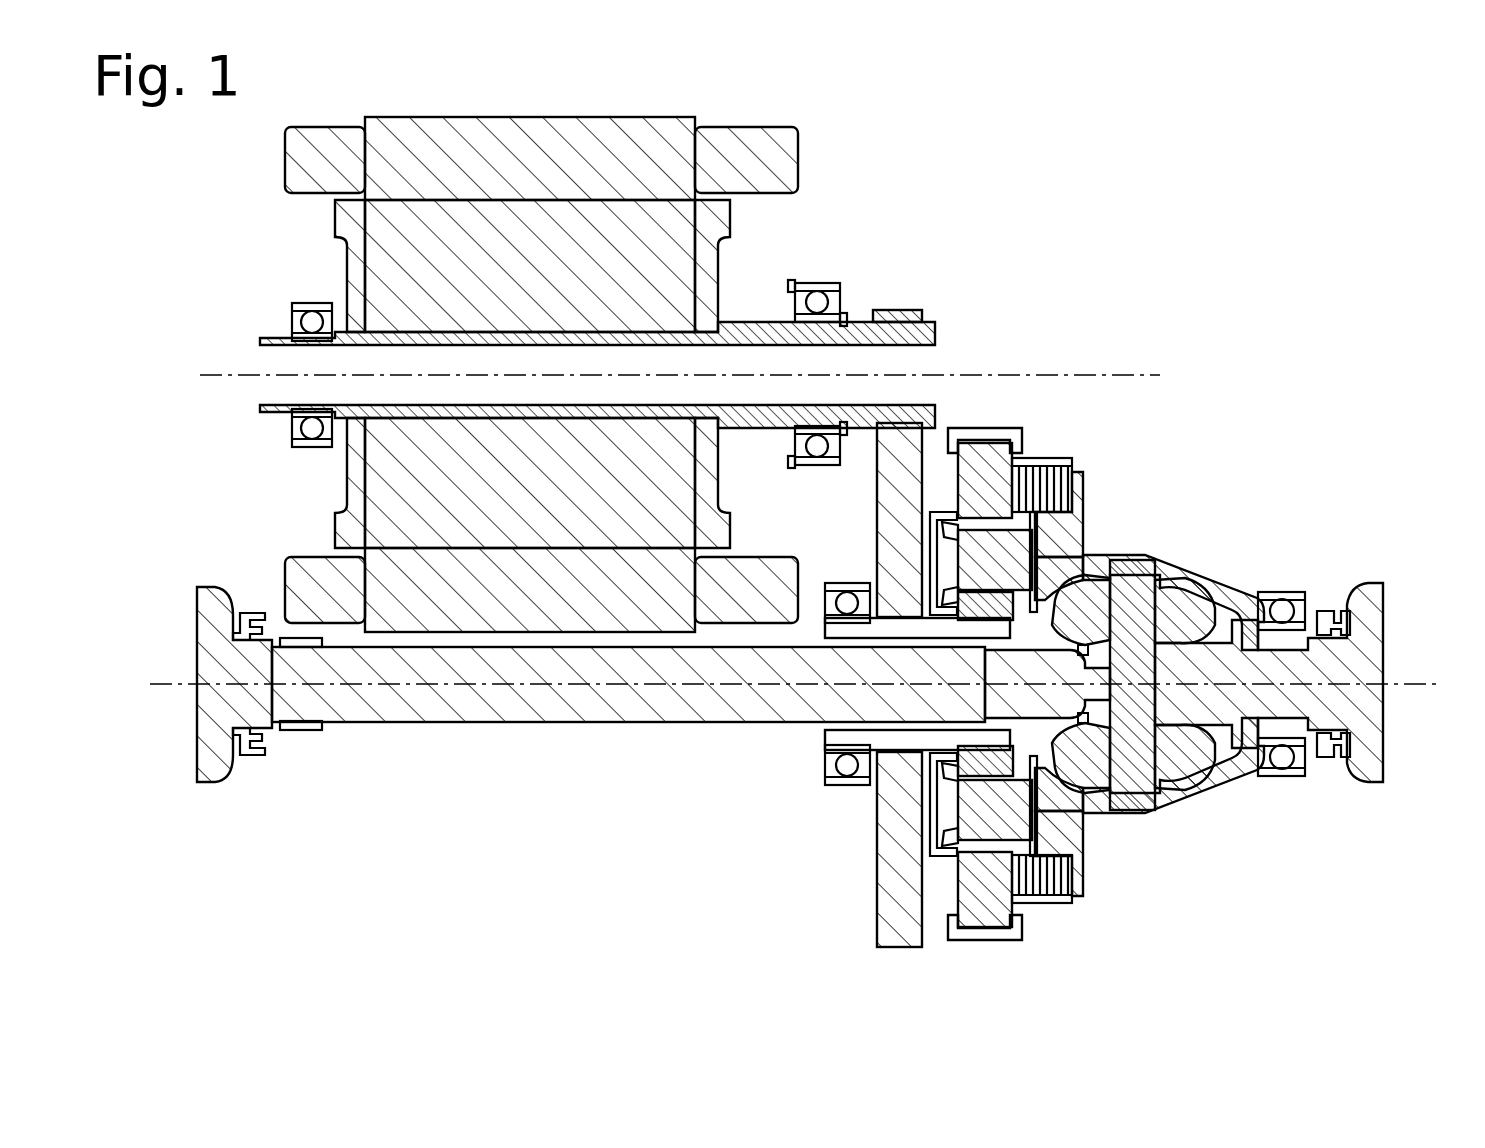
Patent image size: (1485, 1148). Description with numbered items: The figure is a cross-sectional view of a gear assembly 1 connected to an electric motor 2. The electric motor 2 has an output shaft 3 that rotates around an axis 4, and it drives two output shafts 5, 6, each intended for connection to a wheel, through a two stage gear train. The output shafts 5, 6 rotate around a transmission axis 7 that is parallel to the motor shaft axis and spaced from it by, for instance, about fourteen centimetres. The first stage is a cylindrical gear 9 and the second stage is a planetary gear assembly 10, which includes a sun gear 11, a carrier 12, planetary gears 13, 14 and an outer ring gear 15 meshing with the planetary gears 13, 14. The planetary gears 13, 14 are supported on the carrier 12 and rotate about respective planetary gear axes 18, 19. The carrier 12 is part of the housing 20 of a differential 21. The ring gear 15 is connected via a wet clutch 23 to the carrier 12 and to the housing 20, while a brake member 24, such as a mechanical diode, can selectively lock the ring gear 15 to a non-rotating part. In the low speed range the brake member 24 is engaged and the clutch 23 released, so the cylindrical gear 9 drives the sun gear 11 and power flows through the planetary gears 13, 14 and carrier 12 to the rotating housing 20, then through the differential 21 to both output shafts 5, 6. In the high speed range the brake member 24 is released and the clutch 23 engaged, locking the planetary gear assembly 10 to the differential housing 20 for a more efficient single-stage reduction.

The gear assembly 1 is at (1126, 225).
The electric motor 2 is at (287, 166).
The output shaft 3 is at (935, 333).
The axis 4 is at (1160, 375).
The output shaft 5 is at (378, 723).
The output shaft 6 is at (1374, 780).
The transmission axis 7 is at (1430, 684).
The cylindrical gear 9 is at (888, 495).
The planetary gear assembly 10 is at (936, 889).
The sun gear 11 is at (965, 747).
The carrier 12 is at (1083, 522).
The planetary gear 13 is at (957, 573).
The planetary gear 14 is at (1080, 850).
The outer ring gear 15 is at (1006, 462).
The planetary gear axis 18 is at (965, 556).
The planetary gear axis 19 is at (967, 800).
The housing 20 is at (1139, 556).
The differential 21 is at (1153, 622).
The wet clutch 23 is at (1046, 491).
The brake member 24 is at (996, 433).